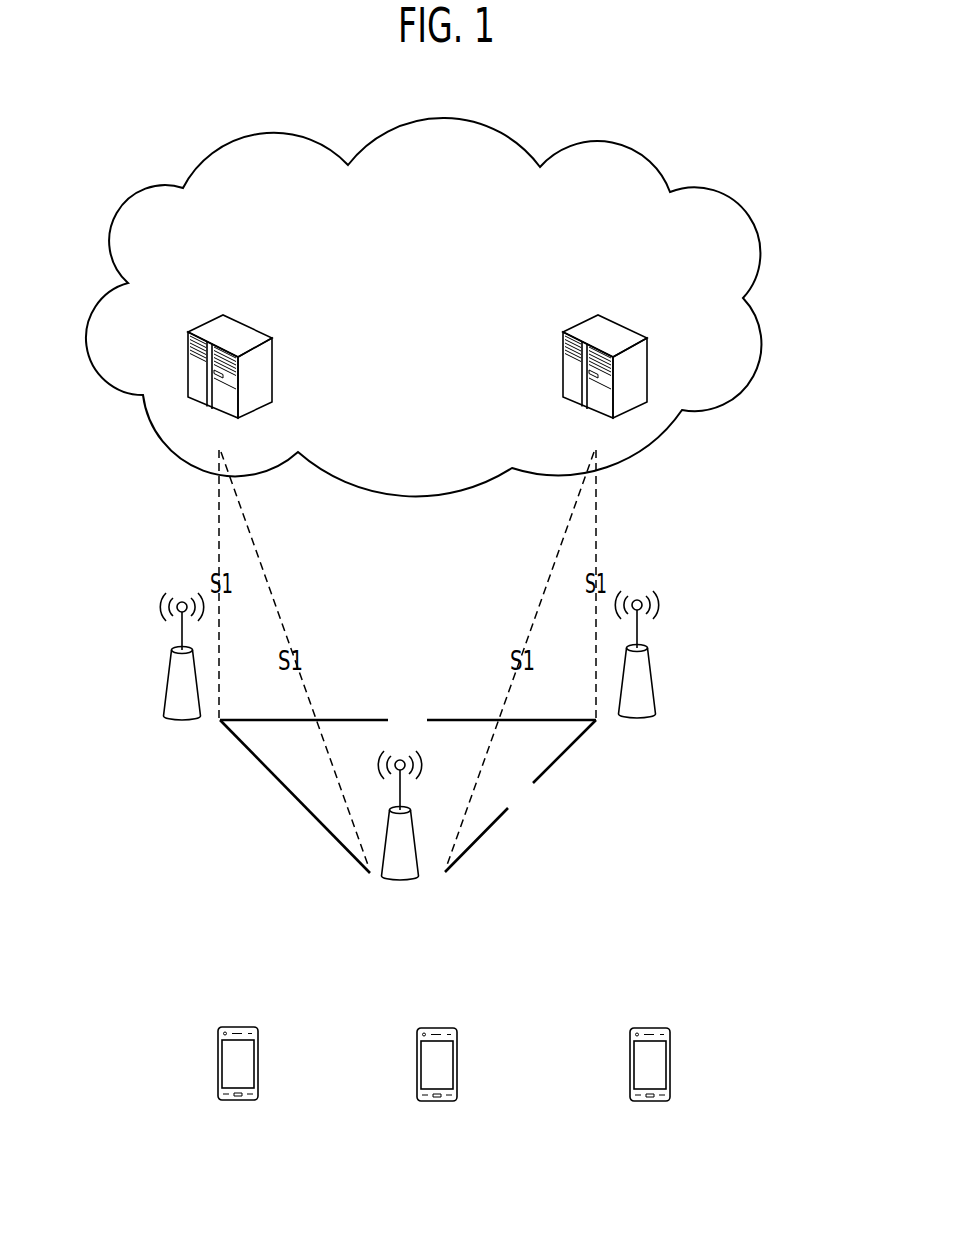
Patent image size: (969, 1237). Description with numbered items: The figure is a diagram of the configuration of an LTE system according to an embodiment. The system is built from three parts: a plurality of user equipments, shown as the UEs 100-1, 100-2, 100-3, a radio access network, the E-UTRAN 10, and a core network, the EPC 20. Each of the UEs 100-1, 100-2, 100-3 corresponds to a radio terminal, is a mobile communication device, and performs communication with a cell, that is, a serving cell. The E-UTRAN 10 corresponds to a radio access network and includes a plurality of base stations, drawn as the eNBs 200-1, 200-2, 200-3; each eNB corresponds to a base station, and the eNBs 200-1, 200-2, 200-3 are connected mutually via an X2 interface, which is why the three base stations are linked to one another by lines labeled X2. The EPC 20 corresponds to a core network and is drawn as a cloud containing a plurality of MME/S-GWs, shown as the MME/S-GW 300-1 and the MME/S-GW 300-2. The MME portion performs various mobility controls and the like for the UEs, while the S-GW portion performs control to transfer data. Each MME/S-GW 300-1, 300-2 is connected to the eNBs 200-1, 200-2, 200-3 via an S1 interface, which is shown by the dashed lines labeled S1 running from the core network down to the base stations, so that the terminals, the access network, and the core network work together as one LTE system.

The E-UTRAN 10 is at (460, 713).
The EPC 20 is at (647, 155).
The UE 100-1 is at (275, 1000).
The UE 100-2 is at (472, 1002).
The UE 100-3 is at (663, 1027).
The eNB 200-1 is at (168, 687).
The eNB 200-2 is at (418, 853).
The eNB 200-3 is at (650, 662).
The MME/S-GW 300-1 is at (277, 301).
The MME/S-GW 300-2 is at (635, 305).